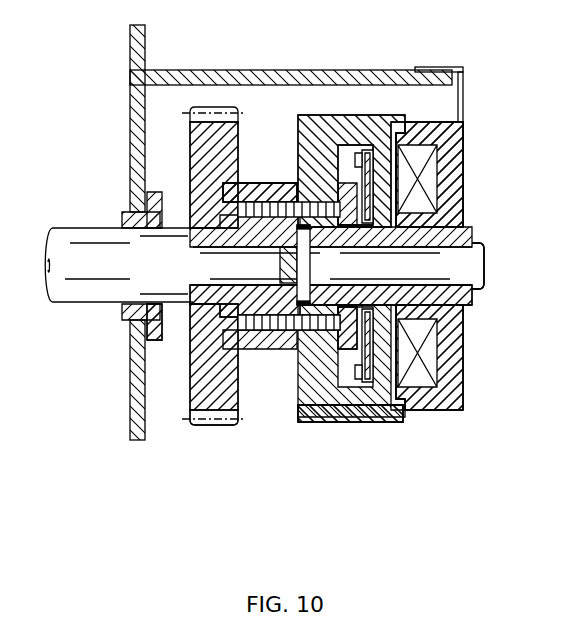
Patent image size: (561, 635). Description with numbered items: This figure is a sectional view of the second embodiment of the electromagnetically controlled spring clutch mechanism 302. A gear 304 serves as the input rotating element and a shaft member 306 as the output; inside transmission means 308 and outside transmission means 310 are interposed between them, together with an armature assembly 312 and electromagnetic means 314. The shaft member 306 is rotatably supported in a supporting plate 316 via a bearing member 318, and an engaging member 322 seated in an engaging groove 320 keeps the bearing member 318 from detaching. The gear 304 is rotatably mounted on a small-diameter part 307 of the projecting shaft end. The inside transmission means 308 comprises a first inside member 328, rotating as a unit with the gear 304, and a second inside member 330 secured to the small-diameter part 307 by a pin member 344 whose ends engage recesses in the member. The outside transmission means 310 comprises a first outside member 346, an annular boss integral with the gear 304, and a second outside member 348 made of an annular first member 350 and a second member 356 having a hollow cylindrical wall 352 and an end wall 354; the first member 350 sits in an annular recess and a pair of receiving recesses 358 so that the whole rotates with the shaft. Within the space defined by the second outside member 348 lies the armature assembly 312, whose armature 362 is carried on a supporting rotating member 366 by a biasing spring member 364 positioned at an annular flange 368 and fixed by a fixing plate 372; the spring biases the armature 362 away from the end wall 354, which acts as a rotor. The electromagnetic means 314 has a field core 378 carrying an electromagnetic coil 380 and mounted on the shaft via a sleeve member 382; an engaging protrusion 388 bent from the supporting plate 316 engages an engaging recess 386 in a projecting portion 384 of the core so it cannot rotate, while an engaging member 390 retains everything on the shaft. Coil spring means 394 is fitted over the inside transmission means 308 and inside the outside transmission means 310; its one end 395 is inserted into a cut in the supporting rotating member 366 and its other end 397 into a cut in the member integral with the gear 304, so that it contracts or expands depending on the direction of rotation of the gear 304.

The electromagnetically controlled spring clutch mechanism 302 is at (212, 462).
The gear 304 is at (197, 162).
The shaft member 306 is at (78, 293).
The small-diameter part 307 is at (448, 258).
The inside transmission means 308 is at (267, 332).
The outside transmission means 310 is at (290, 147).
The armature assembly 312 is at (347, 175).
The electromagnetic means 314 is at (465, 357).
The supporting plate 316 is at (133, 410).
The bearing member 318 is at (155, 335).
The engaging groove 320 is at (153, 250).
The engaging member 322 is at (165, 215).
The first inside member 328 is at (248, 352).
The second inside member 330 is at (387, 370).
The pin member 344 is at (268, 203).
The first outside member 346 is at (250, 188).
The second outside member 348 is at (349, 105).
The first member 350 is at (294, 395).
The hollow cylindrical wall 352 is at (369, 417).
The end wall 354 is at (420, 400).
The second member 356 is at (387, 425).
The receiving recesses 358 is at (342, 355).
The armature 362 is at (368, 163).
The biasing spring member 364 is at (357, 152).
The supporting rotating member 366 is at (318, 200).
The annular flange 368 is at (372, 310).
The fixing plate 372 is at (390, 213).
The field core 378 is at (452, 164).
The electromagnetic coil 380 is at (430, 184).
The sleeve member 382 is at (458, 231).
The projecting portion 384 is at (457, 136).
The engaging recess 386 is at (455, 97).
The engaging protrusion 388 is at (268, 74).
The engaging member 390 is at (472, 298).
The coil spring means 394 is at (263, 200).
The one end 395 is at (340, 390).
The other end 397 is at (213, 358).